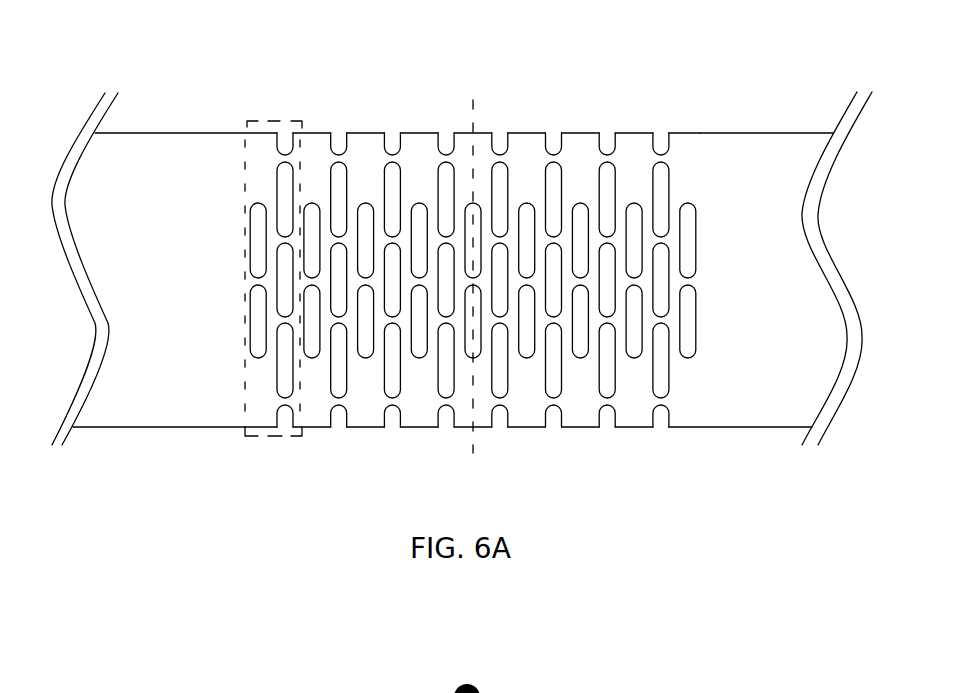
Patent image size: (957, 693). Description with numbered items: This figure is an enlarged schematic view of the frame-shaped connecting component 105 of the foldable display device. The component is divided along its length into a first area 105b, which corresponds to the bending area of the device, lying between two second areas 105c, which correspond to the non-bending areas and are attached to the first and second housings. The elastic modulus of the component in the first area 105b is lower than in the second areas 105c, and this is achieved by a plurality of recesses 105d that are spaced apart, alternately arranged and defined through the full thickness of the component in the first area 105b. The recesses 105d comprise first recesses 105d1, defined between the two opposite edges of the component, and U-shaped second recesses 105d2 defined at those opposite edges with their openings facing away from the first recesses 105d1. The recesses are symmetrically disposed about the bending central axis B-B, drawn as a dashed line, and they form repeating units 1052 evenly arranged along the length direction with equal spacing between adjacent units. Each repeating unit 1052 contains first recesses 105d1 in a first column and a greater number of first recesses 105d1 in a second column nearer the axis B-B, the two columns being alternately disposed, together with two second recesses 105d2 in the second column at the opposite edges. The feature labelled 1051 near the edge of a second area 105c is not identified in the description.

The frame-shaped connecting component 105 is at (415, 63).
The first area 105b is at (517, 143).
The second area 105c is at (147, 405).
The recess 105d is at (608, 377).
The first recess 105d1 is at (262, 212).
The second recess 105d2 is at (291, 141).
The solid portion 1051 is at (714, 143).
The repeating unit 1052 is at (277, 437).
The bending central axis B- B is at (468, 279).